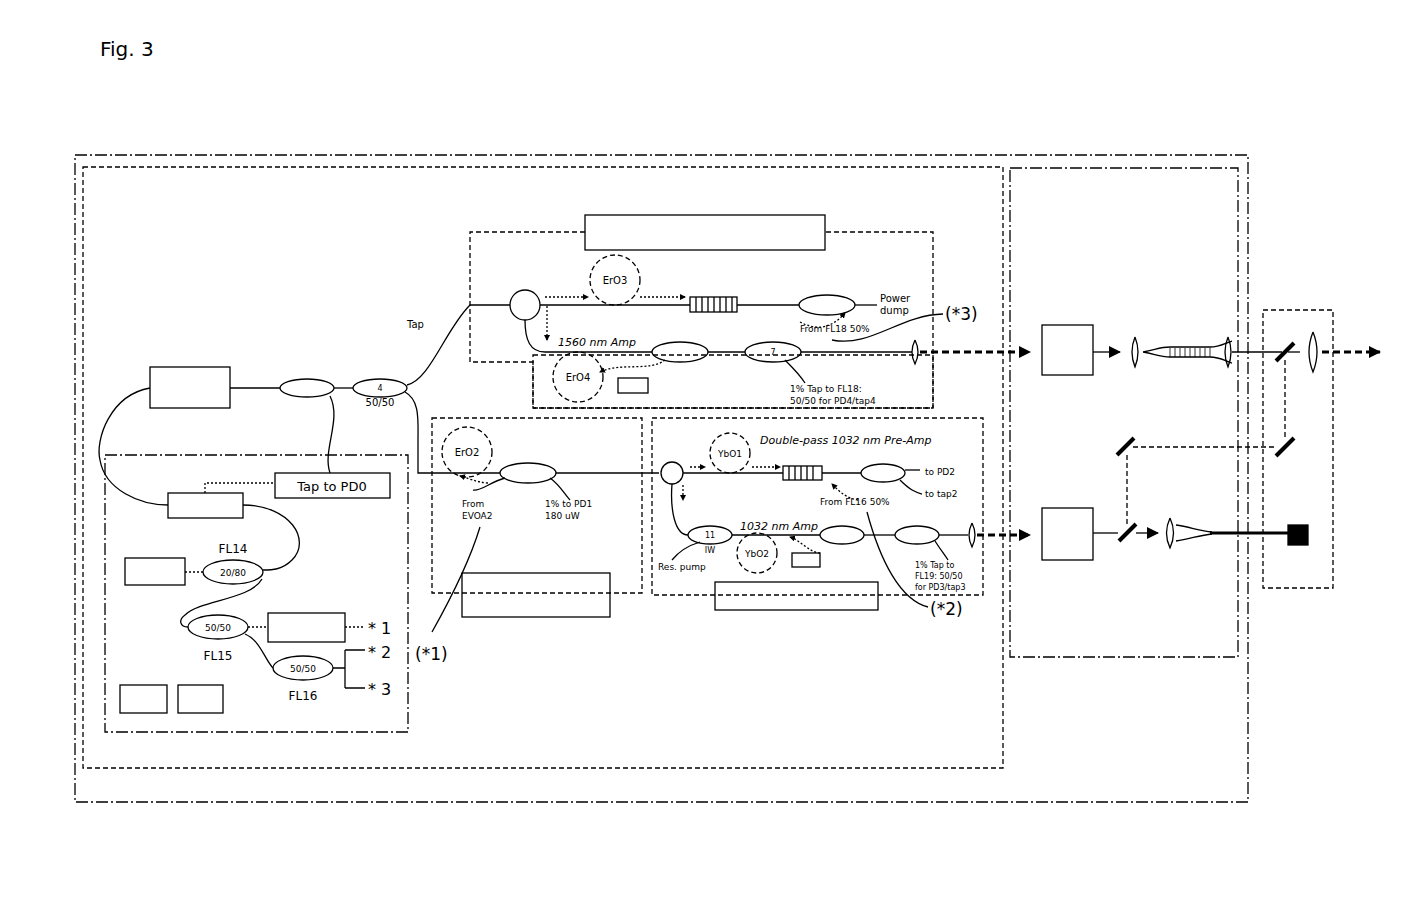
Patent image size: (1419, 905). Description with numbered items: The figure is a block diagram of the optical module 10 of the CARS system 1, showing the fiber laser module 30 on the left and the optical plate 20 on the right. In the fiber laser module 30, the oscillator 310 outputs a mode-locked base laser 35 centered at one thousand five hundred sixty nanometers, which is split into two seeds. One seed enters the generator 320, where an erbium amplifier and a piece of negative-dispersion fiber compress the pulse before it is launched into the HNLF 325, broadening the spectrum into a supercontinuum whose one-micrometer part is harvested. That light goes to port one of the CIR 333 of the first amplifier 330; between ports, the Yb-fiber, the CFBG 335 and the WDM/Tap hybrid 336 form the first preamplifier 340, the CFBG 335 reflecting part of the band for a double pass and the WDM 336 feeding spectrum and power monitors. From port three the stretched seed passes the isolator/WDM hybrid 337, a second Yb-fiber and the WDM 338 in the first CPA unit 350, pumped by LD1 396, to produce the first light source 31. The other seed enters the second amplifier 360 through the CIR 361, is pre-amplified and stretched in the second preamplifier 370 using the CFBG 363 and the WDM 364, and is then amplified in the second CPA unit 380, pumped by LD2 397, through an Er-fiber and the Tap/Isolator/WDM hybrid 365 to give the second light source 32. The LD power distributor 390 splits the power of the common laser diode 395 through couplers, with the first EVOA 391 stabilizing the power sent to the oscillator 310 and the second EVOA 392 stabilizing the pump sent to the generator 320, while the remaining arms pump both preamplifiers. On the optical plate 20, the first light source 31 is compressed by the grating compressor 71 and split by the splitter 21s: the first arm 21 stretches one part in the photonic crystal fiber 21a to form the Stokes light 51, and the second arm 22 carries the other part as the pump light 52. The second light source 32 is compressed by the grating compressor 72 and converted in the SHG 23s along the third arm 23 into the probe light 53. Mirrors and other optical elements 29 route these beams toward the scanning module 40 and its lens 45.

The system 1 is at (1123, 136).
The optical module 10 is at (1075, 778).
The optical plate 20 is at (1175, 657).
The first arm 21 is at (1172, 555).
The photonic crystal fiber 21a is at (1215, 547).
The splitter 21s is at (1115, 447).
The second arm 22 is at (1150, 440).
The third arm 23 is at (1125, 330).
The SHG 23s is at (1175, 318).
The optical elements 29 is at (1220, 612).
The fiber laser module 30 is at (925, 752).
The first light source 31 is at (993, 545).
The second light source 32 is at (950, 358).
The base laser 35 is at (265, 380).
The scanning module 40 is at (1335, 500).
The lens 45 is at (1316, 334).
The Stokes light 51 is at (1288, 476).
The pump light 52 is at (1175, 452).
The probe light 53 is at (1232, 366).
The free-space grating compressor 71 is at (1080, 560).
The free-space grating compressor 72 is at (1085, 325).
The oscillator 310 is at (180, 367).
The generator 320 is at (630, 593).
The HNLF 325 is at (602, 478).
The first amplifier 330 is at (893, 596).
The CIR 333 is at (700, 448).
The CFBG 335 is at (783, 482).
The WDM/Tap hybrid component 336 is at (900, 480).
The isolator/WDM hybrid component 337 is at (706, 495).
The WDM 338 is at (862, 540).
The first preamplifier 340 is at (913, 460).
The first CPA unit 350 is at (695, 580).
The second amplifier 360 is at (480, 275).
The CIR 361 is at (515, 294).
The CFBG 363 is at (688, 310).
The WDM 364 is at (838, 298).
The Tap/Isolator/WDM hybrid component 365 is at (700, 350).
The second preamplifier 370 is at (572, 258).
The second CPA unit 380 is at (535, 362).
The LD power distributor 390 is at (388, 712).
The first EVOA 391 is at (175, 493).
The second EVOA 392 is at (310, 613).
The first laser diode 395 is at (155, 585).
The LD1 396 is at (142, 713).
The LD2 397 is at (205, 713).